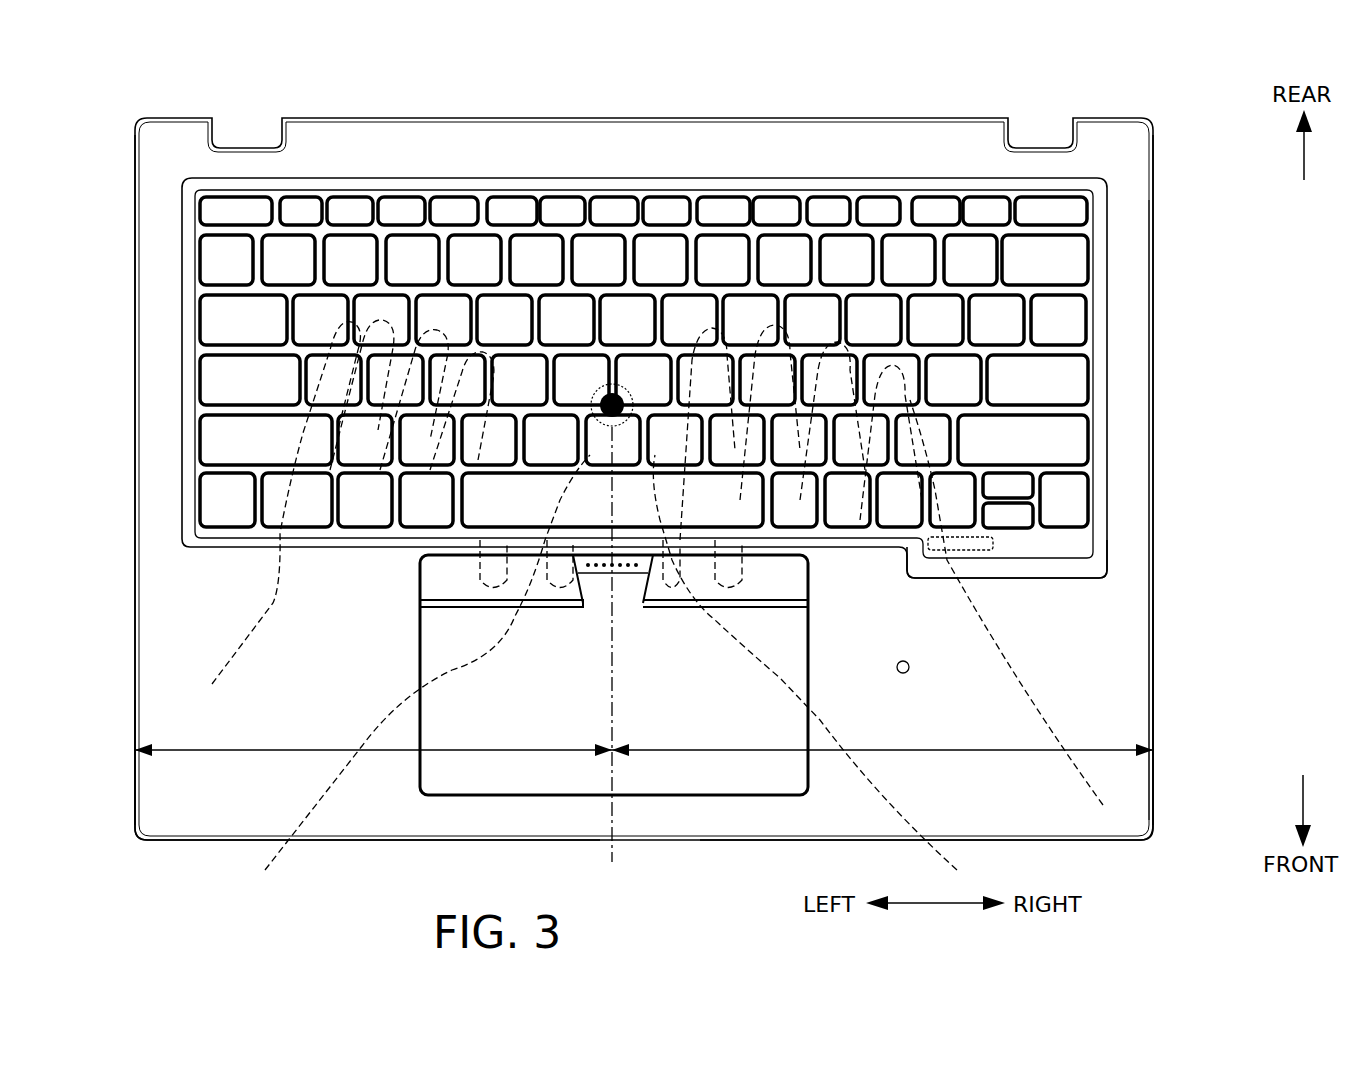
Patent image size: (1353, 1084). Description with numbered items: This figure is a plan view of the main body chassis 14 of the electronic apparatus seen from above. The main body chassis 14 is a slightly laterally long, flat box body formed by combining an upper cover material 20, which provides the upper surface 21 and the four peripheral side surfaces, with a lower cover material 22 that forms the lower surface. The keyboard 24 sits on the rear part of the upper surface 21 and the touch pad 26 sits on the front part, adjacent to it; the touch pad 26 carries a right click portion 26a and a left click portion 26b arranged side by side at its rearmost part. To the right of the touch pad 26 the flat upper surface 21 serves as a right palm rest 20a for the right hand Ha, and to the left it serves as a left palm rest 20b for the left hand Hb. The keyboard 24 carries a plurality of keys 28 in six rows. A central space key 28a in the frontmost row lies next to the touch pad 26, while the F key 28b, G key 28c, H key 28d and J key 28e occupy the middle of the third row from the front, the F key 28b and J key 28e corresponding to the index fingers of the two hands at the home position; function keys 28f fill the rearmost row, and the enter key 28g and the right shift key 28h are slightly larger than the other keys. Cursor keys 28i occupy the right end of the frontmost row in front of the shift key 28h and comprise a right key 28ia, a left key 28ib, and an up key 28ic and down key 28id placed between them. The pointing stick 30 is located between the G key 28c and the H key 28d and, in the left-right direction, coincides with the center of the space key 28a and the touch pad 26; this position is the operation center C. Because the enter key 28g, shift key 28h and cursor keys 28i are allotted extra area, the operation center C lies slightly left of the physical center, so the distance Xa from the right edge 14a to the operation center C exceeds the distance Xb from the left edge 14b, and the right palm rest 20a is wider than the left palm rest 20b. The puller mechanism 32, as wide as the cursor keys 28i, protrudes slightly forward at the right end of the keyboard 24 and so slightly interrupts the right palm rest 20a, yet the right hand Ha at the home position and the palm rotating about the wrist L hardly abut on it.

The main body chassis 14 is at (1058, 104).
The right edge 14a is at (1155, 241).
The left edge 14b is at (135, 322).
The upper cover material 20 is at (1130, 152).
The upper surface 21 is at (1204, 479).
The right palm rest 20a is at (1095, 722).
The left palm rest 20b is at (377, 777).
The lower cover material 22 is at (1130, 205).
The keyboard 24 is at (831, 146).
The keys 28 is at (677, 333).
The space key 28a is at (540, 515).
The F key 28b is at (523, 388).
The G key 28c is at (583, 385).
The H key 28d is at (640, 385).
The J key 28e is at (700, 385).
The function keys 28f is at (617, 210).
The enter key 28g is at (1060, 380).
The shift key 28h is at (1060, 440).
The cursor keys 28i is at (1112, 515).
The right key 28ia is at (1070, 500).
The left key 28ib is at (990, 550).
The up key 28ic is at (1010, 490).
The down key 28id is at (1010, 515).
The pointing stick 30 is at (600, 409).
The puller mechanism 32 is at (1073, 577).
The touch pad 26 is at (614, 727).
The right click portion 26a is at (660, 588).
The left click portion 26b is at (556, 588).
The operation center C is at (612, 775).
The distance from right edge to operation center Xa is at (882, 739).
The distance from left edge to operation center Xb is at (373, 739).
The right hand Ha is at (980, 640).
The left hand Hb is at (212, 684).
The wrist L is at (910, 665).